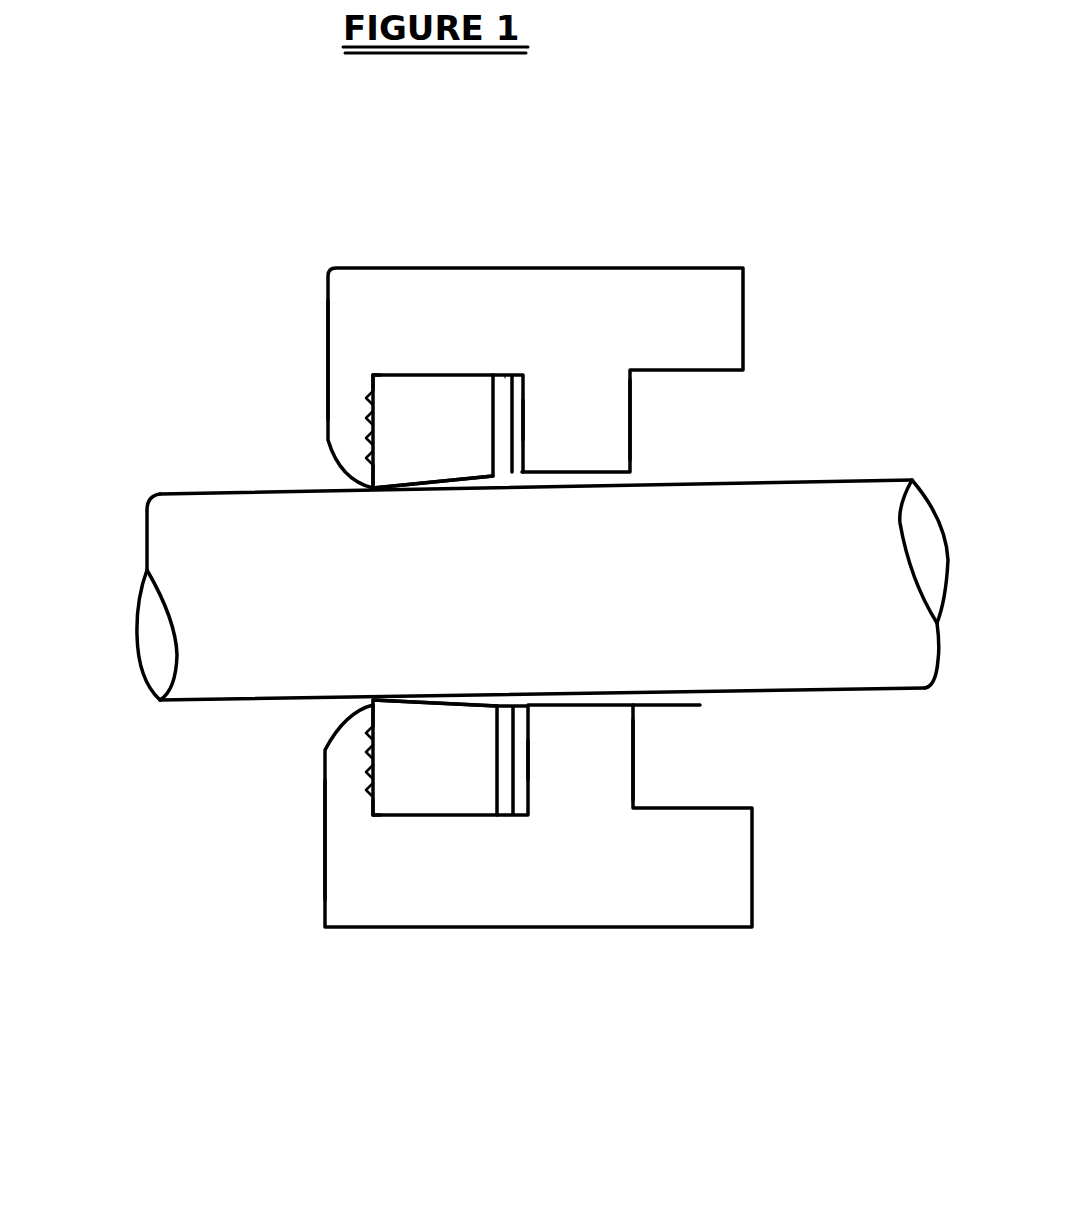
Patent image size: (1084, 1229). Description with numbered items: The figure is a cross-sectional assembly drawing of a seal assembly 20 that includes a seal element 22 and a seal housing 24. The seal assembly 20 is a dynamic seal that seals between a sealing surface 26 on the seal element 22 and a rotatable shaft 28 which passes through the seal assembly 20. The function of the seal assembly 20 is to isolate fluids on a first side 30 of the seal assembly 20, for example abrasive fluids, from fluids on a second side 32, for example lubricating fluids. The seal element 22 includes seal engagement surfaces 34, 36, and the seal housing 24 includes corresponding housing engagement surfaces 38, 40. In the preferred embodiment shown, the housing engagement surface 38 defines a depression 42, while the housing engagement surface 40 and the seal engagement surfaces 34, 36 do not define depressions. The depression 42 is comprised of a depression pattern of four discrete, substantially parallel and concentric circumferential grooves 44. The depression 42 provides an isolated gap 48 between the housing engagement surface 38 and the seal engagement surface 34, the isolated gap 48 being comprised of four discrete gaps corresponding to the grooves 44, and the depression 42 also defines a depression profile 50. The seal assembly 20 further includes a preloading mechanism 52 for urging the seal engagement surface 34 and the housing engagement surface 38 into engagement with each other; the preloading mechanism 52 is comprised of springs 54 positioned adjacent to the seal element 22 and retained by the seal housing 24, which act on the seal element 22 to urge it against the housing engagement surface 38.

The seal assembly 20 is at (302, 445).
The seal element 22 is at (452, 403).
The seal housing 24 is at (567, 307).
The sealing surface 26 is at (373, 488).
The rotatable shaft 28 is at (800, 510).
The first side 30 is at (247, 775).
The second side 32 is at (697, 712).
The seal engagement surface 34 is at (375, 375).
The seal engagement surface 36 is at (493, 377).
The housing engagement surface 38 is at (362, 415).
The housing engagement surface 40 is at (472, 375).
The depression 42 is at (362, 377).
The circumferential grooves 44 is at (372, 814).
The isolated gap 48 is at (370, 458).
The depression profile 50 is at (367, 735).
The preloading mechanism 52 is at (542, 368).
The springs 54 is at (513, 413).